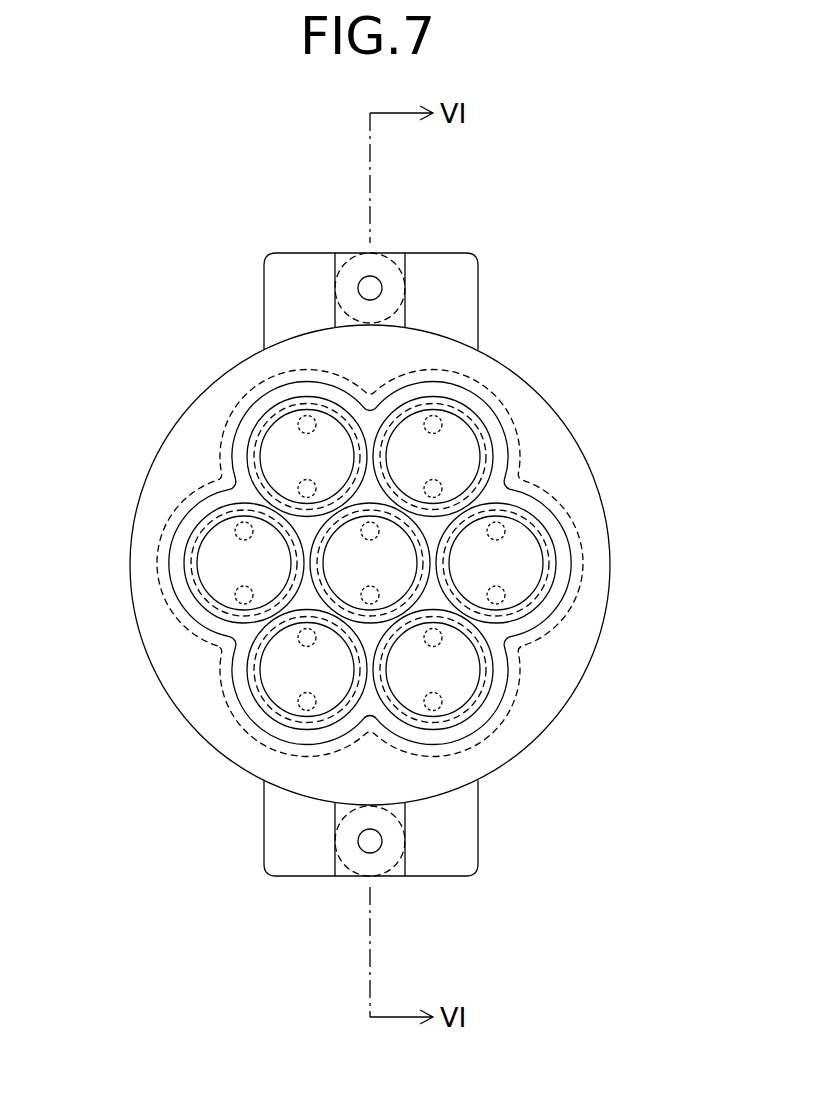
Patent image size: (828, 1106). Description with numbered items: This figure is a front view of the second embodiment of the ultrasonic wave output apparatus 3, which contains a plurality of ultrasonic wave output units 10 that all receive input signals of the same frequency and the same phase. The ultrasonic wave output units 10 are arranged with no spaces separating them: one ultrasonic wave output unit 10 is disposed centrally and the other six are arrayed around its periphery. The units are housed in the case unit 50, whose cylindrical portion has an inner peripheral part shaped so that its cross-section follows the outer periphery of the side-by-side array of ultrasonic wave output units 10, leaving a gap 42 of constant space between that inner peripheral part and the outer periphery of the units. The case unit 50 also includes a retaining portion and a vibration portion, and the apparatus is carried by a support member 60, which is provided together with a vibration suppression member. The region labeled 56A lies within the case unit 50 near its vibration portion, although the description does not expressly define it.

The ultrasonic wave output apparatus 3 is at (555, 195).
The ultrasonic wave output unit 10 is at (455, 677).
The gap 42 is at (201, 514).
The case unit 50 is at (547, 460).
The accommodating space 56A is at (207, 409).
The support member 60 is at (442, 822).